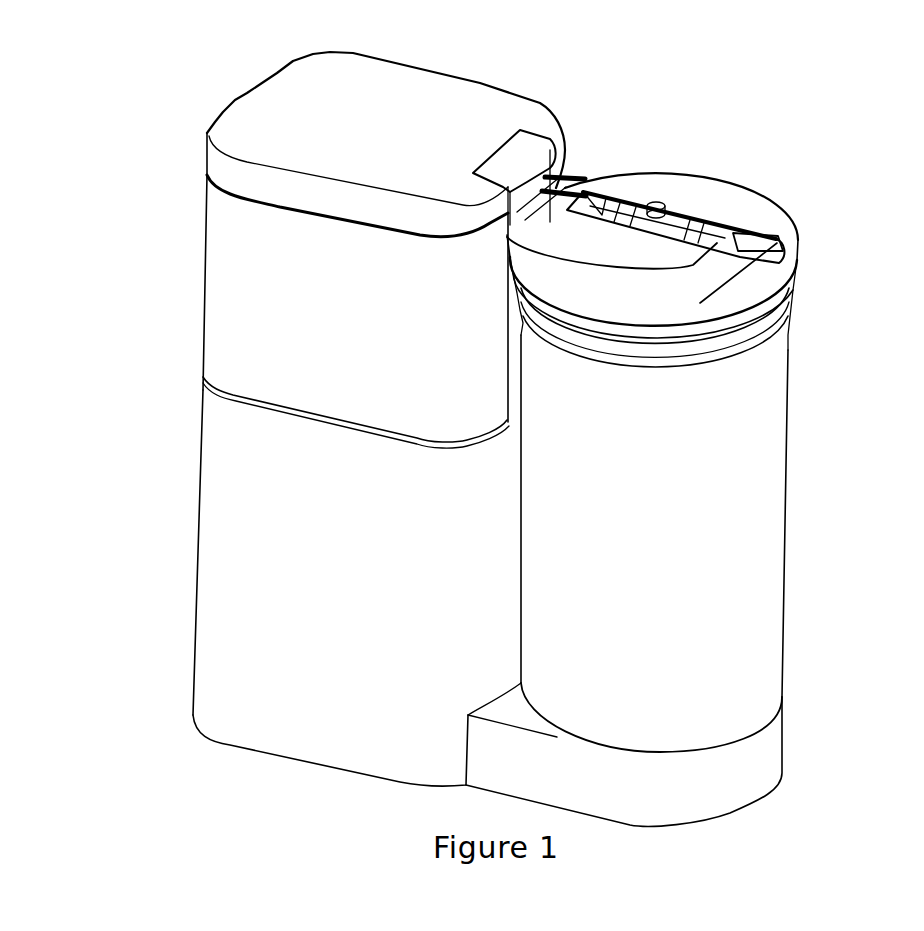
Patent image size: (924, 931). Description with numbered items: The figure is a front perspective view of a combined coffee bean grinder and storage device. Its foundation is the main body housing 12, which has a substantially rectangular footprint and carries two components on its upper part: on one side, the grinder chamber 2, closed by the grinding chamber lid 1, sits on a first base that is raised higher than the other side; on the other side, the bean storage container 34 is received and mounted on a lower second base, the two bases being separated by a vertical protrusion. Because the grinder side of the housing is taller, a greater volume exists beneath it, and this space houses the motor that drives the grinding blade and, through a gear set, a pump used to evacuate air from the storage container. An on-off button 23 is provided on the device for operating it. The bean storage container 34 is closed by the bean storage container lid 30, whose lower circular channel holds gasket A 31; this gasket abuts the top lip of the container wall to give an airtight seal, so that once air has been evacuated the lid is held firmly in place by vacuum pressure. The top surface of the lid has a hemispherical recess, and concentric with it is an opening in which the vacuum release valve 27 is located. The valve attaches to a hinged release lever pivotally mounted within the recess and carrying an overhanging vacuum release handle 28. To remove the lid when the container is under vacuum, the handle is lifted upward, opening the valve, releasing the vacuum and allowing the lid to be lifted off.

The grinding chamber lid 1 is at (327, 80).
The grinder chamber 2 is at (247, 277).
The main body housing 12 is at (240, 535).
The on-off button 23 is at (503, 163).
The vacuum release valve 27 is at (668, 207).
The vacuum release handle 28 is at (753, 243).
The bean storage container lid 30 is at (627, 181).
The gasket A 31 is at (800, 293).
The bean storage container 34 is at (758, 507).